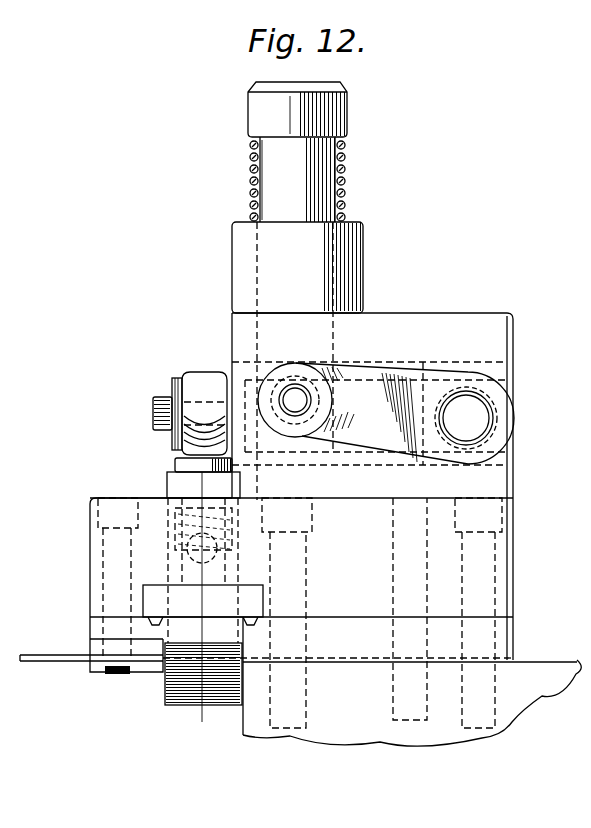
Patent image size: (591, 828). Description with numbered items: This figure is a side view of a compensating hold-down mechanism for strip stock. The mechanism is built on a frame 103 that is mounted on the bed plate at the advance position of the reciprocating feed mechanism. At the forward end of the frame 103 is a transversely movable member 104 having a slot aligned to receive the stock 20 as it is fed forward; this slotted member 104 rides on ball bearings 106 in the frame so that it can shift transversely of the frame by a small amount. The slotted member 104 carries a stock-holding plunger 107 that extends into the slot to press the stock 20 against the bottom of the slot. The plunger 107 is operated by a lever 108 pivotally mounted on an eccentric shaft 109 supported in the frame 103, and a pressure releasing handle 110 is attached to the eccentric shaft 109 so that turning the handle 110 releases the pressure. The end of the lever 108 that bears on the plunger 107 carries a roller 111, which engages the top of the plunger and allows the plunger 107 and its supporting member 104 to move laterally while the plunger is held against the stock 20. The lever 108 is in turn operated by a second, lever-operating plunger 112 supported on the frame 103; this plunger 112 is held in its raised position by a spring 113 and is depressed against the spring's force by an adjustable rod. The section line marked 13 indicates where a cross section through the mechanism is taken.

The lever-operating plunger 112 is at (262, 122).
The spring 113 is at (252, 186).
The pressure releasing handle 110 is at (410, 375).
The eccentric shaft 109 is at (476, 415).
The roller 111 is at (197, 374).
The lever 108 is at (153, 413).
The stock-holding plunger 107 is at (178, 465).
The section line 13- 13 is at (206, 465).
The frame 103 is at (506, 529).
The ball bearings 106 is at (240, 622).
The stock 20 is at (60, 638).
The transversely movable member 104 is at (186, 683).